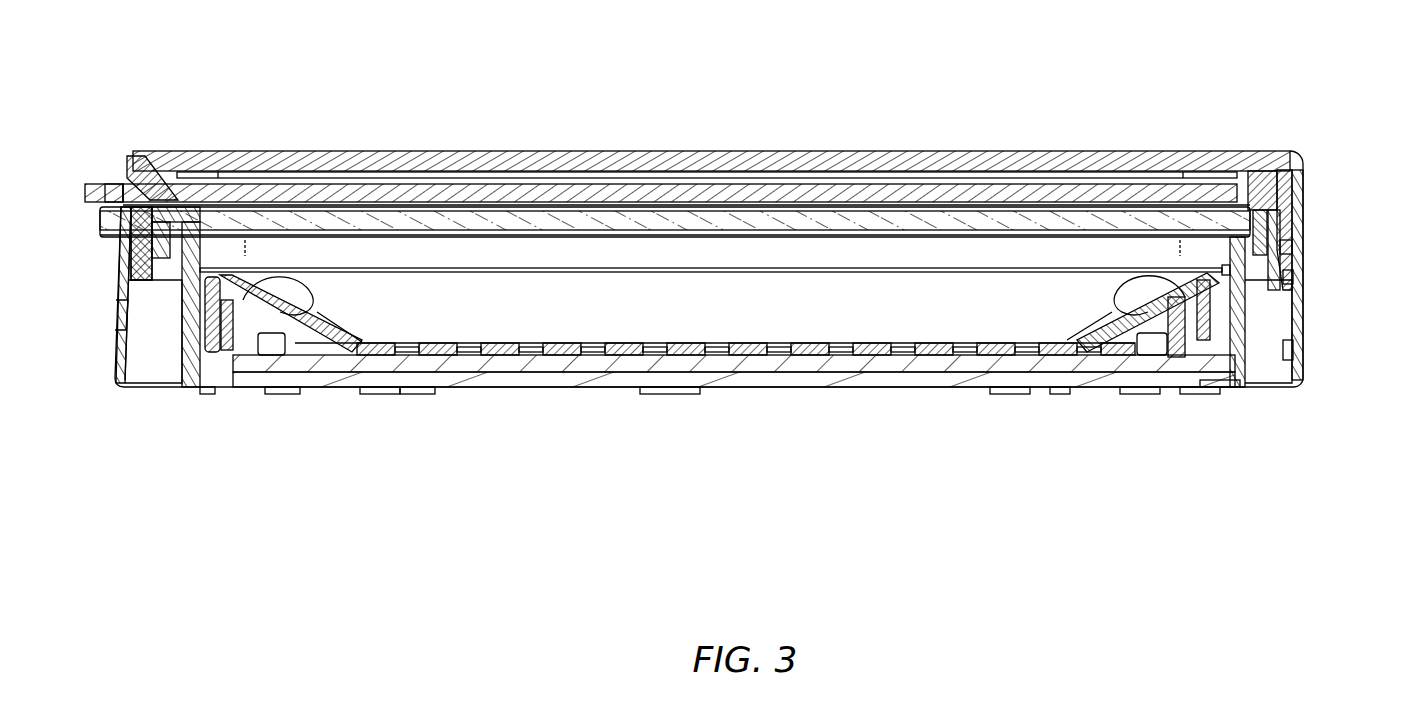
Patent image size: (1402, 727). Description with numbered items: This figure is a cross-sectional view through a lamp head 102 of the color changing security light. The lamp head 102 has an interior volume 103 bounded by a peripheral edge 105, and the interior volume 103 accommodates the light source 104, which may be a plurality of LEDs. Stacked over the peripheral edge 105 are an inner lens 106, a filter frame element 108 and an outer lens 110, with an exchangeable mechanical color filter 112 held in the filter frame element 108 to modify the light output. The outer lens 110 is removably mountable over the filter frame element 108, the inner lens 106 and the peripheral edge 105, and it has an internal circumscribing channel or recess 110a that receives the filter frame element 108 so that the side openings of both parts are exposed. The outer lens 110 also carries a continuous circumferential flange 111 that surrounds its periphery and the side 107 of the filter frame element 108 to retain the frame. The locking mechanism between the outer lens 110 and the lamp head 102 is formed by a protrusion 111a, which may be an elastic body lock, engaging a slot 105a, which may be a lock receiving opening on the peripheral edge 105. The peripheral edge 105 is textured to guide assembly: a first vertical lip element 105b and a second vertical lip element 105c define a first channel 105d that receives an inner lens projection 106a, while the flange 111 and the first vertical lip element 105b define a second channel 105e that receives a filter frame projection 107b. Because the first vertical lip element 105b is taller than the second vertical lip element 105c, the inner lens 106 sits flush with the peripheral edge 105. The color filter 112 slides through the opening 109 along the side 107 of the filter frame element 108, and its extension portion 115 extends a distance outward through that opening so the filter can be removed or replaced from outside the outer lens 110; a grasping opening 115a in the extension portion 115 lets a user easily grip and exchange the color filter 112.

The lamp head 102 is at (1278, 412).
The interior volume 103 is at (408, 318).
The light source 104 is at (930, 370).
The peripheral edge 105 is at (117, 373).
The slot 105a is at (120, 228).
The first vertical lip element 105b is at (1290, 247).
The second vertical lip element 105c is at (1217, 383).
The first channel 105d is at (1263, 300).
The second channel 105e is at (1303, 277).
The inner lens 106 is at (1290, 220).
The inner lens projection 106a is at (1298, 350).
The side of filter frame element 107 is at (1298, 155).
The filter frame projection 107b is at (1280, 203).
The filter frame element 108 is at (100, 208).
The opening 109 is at (128, 160).
The outer lens 110 is at (200, 158).
The internal circumscribing channel or recess 110a is at (1263, 170).
The continuous circumferential flange 111 is at (1303, 180).
The protrusion 111a is at (123, 310).
The color filter 112 is at (715, 195).
The extension portion 115 is at (90, 183).
The grasping opening 115a is at (113, 182).